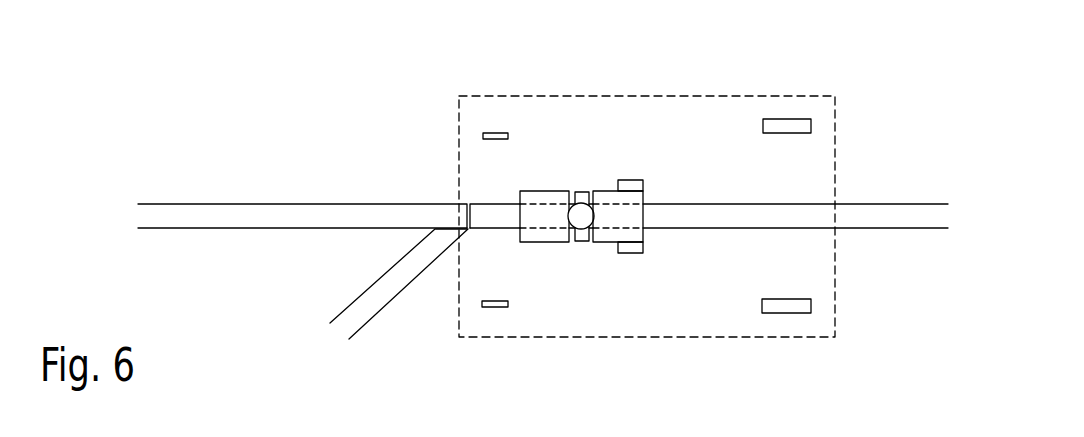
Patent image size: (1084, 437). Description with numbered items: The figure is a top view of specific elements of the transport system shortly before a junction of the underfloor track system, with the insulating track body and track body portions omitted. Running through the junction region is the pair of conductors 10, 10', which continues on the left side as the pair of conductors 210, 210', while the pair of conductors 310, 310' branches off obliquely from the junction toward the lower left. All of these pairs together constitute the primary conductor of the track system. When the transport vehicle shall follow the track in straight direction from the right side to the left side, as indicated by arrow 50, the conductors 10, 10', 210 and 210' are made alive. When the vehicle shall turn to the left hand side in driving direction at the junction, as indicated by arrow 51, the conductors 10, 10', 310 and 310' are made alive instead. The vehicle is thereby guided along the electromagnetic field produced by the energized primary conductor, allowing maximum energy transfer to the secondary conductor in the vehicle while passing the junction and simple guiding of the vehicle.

The conductor 10 is at (709, 174).
The conductor 10' is at (710, 263).
The arrow 50 is at (500, 45).
The arrow 51 is at (508, 377).
The conductor 210 is at (302, 174).
The conductor 210' is at (302, 266).
The conductor 310 is at (349, 316).
The conductor 310' is at (398, 327).